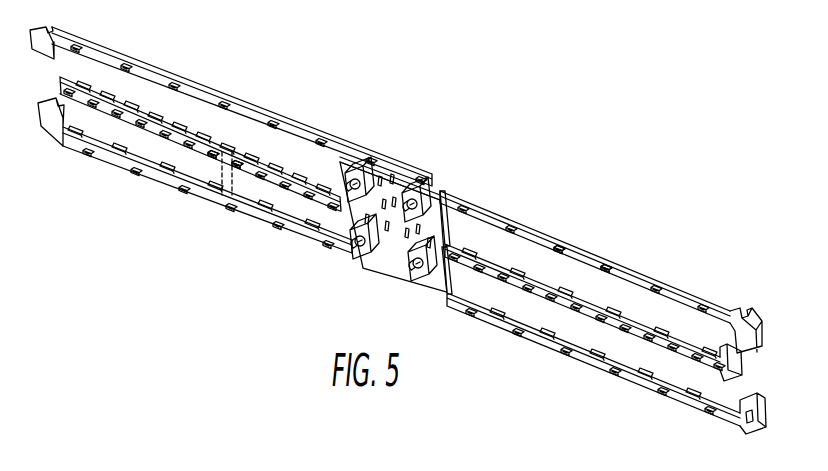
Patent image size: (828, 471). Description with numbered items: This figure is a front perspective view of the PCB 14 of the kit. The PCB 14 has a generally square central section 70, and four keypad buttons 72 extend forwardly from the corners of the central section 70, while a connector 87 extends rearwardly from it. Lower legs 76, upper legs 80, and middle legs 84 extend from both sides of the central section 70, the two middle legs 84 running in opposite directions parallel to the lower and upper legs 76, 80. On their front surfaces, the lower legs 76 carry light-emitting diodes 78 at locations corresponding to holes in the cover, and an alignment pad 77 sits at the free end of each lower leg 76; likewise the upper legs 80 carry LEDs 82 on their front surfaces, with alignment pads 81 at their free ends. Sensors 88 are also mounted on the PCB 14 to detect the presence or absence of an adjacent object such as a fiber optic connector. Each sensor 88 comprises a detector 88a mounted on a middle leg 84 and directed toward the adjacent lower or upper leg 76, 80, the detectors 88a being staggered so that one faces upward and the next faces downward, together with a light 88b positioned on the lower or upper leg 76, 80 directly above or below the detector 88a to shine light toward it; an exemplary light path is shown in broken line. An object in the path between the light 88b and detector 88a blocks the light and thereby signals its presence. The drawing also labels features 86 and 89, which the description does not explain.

The PCB 14 is at (508, 182).
The central section 70 is at (383, 195).
The keypad buttons 72 is at (350, 186).
The lower legs 76 is at (160, 181).
The alignment pad 77 is at (749, 426).
The light-emitting diodes (LEDs) 78 is at (661, 397).
The upper legs 80 is at (200, 99).
The alignment pads 81 is at (753, 333).
The LEDs 82 is at (604, 265).
The middle legs 84 is at (683, 345).
The end tabs of middle rail 86 is at (713, 374).
The connector 87 is at (460, 143).
The sensors 88 is at (206, 165).
The detector 88a is at (223, 142).
The light 88b is at (227, 196).
The rail top edge 89 is at (390, 176).